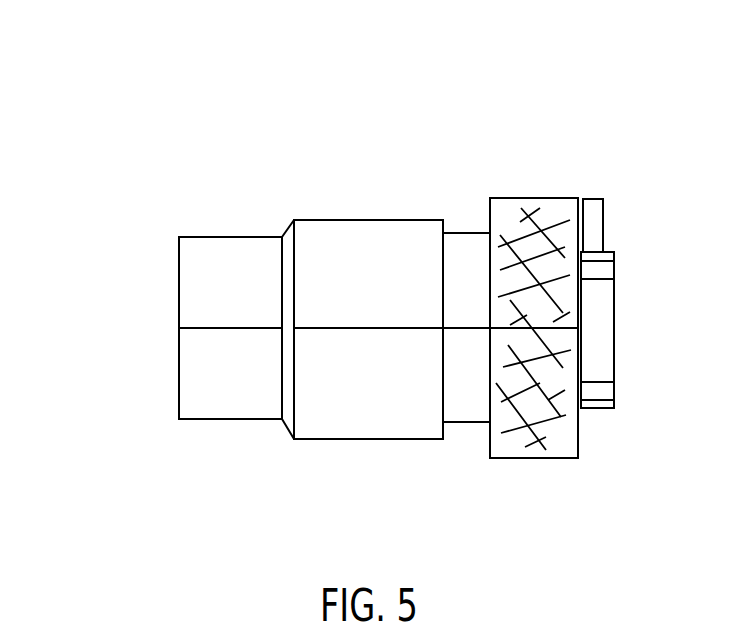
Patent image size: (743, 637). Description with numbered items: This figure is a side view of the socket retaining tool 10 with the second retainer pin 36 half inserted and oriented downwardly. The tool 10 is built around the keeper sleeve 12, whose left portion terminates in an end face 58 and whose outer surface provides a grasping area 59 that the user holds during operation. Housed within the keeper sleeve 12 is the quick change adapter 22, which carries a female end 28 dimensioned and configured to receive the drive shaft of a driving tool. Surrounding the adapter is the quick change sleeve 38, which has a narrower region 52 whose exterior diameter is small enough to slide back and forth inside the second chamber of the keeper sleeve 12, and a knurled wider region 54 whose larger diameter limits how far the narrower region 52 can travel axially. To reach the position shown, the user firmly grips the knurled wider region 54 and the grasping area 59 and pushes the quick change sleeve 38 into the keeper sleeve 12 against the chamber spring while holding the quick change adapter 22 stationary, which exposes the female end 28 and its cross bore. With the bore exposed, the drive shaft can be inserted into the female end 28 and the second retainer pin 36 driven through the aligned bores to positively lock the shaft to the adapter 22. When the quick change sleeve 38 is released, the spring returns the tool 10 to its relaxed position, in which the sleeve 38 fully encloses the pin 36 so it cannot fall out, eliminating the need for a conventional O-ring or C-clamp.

The socket retaining tool 10 is at (495, 125).
The keeper sleeve 12 is at (381, 435).
The quick change adapter 22 is at (597, 410).
The female end 28 is at (614, 382).
The second retainer pin 36 is at (603, 202).
The quick change sleeve 38 is at (578, 455).
The narrower region 52 is at (467, 420).
The wider region 54 is at (530, 459).
The end face 58 is at (178, 407).
The grasping area 59 is at (250, 420).